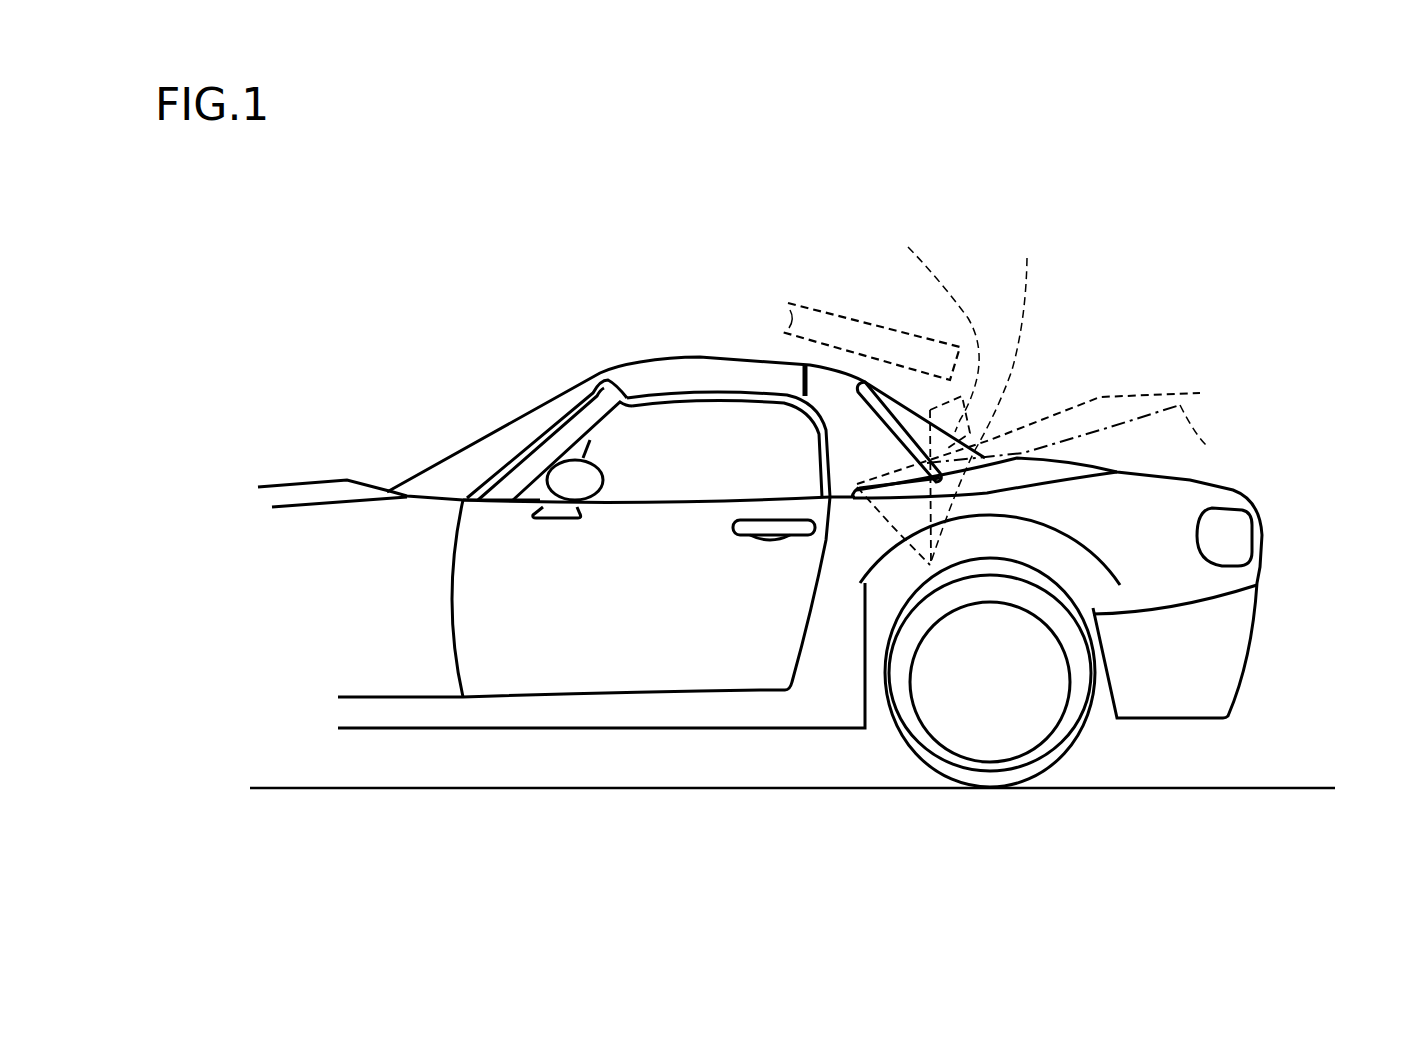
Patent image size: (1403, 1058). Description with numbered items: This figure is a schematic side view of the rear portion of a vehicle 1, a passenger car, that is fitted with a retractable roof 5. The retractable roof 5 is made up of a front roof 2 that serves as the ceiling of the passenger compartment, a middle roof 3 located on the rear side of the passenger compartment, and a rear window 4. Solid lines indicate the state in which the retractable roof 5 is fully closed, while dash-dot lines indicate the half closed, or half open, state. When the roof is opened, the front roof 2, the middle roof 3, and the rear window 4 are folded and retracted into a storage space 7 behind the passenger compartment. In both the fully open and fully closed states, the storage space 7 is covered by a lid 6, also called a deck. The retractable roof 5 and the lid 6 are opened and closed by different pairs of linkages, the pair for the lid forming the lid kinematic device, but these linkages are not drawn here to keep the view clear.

The vehicle 1 is at (505, 355).
The front roof 2 is at (715, 357).
The middle roof 3 is at (837, 367).
The rear window 4 is at (953, 443).
The retractable roof 5 is at (1052, 207).
The lid 6 is at (1077, 458).
The storage space 7 is at (882, 573).